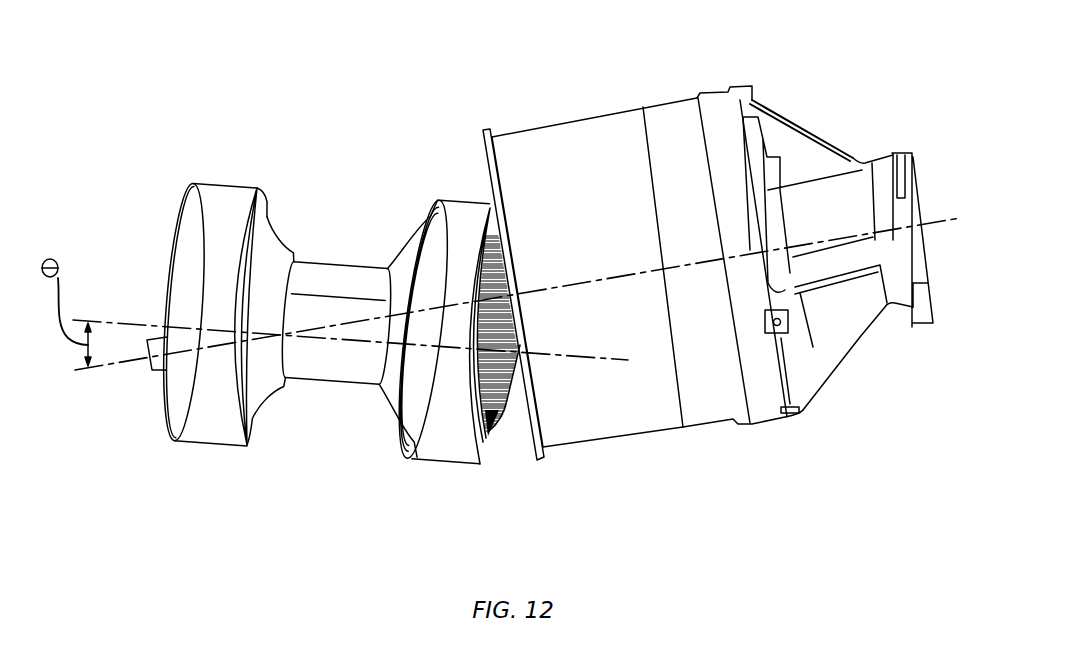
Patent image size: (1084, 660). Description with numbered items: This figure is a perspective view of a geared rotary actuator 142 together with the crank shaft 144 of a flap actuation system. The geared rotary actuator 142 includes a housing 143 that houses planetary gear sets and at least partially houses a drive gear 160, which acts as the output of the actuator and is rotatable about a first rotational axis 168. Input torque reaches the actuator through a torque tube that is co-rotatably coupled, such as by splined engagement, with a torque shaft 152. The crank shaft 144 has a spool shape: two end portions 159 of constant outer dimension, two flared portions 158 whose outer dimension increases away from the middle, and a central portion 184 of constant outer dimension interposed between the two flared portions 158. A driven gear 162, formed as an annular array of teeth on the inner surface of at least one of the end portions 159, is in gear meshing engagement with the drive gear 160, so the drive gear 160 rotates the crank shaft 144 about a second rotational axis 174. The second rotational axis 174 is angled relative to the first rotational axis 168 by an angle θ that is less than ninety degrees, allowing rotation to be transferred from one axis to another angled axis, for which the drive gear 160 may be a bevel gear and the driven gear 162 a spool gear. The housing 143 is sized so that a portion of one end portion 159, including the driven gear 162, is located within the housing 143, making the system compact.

The geared rotary actuator 142 is at (672, 108).
The housing 143 is at (553, 157).
The crank shaft 144 is at (258, 190).
The torque shaft 152 is at (160, 363).
The flared portions 158 is at (264, 392).
The end portions 159 is at (221, 208).
The drive gear 160 is at (517, 320).
The driven gear 162 is at (490, 396).
The first rotational axis 168 is at (117, 367).
The second rotational axis 174 is at (144, 323).
The central portion 184 is at (323, 280).